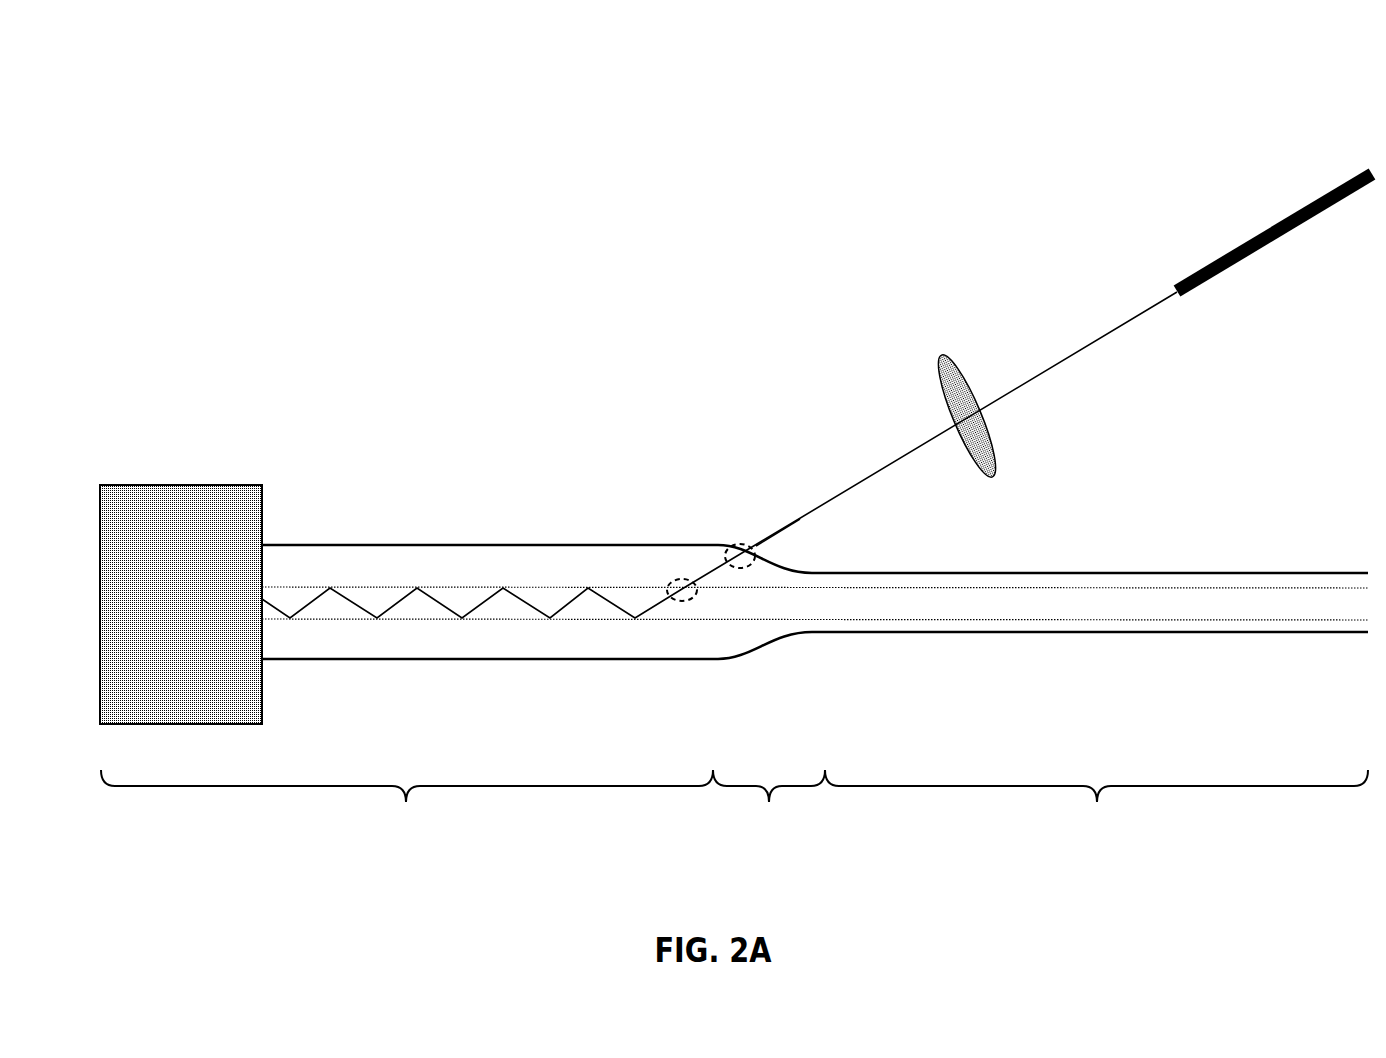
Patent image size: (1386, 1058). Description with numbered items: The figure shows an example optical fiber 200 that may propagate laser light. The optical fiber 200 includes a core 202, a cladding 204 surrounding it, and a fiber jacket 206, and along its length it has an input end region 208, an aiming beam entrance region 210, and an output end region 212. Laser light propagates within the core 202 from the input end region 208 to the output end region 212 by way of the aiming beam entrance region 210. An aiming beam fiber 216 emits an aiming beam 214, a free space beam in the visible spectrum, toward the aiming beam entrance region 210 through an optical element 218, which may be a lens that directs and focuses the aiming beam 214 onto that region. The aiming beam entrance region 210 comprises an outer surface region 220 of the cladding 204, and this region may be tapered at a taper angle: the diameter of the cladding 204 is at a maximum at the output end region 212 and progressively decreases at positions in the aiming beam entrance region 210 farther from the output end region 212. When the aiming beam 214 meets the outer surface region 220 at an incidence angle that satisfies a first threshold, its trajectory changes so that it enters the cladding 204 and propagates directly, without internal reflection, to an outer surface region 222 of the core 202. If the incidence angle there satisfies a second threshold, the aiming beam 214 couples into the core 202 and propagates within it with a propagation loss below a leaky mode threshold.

The optical fiber 200 is at (222, 64).
The core 202 is at (599, 623).
The cladding 204 is at (447, 560).
The fiber jacket 206 is at (205, 518).
The input end region 208 is at (1096, 803).
The aiming beam entrance region 210 is at (769, 803).
The output end region 212 is at (407, 803).
The aiming beam 214 is at (773, 516).
The aiming beam fiber 216 is at (1235, 299).
The optical element 218 is at (1029, 454).
The outer surface region of the cladding 220 is at (716, 538).
The outer surface region of the core 222 is at (692, 617).